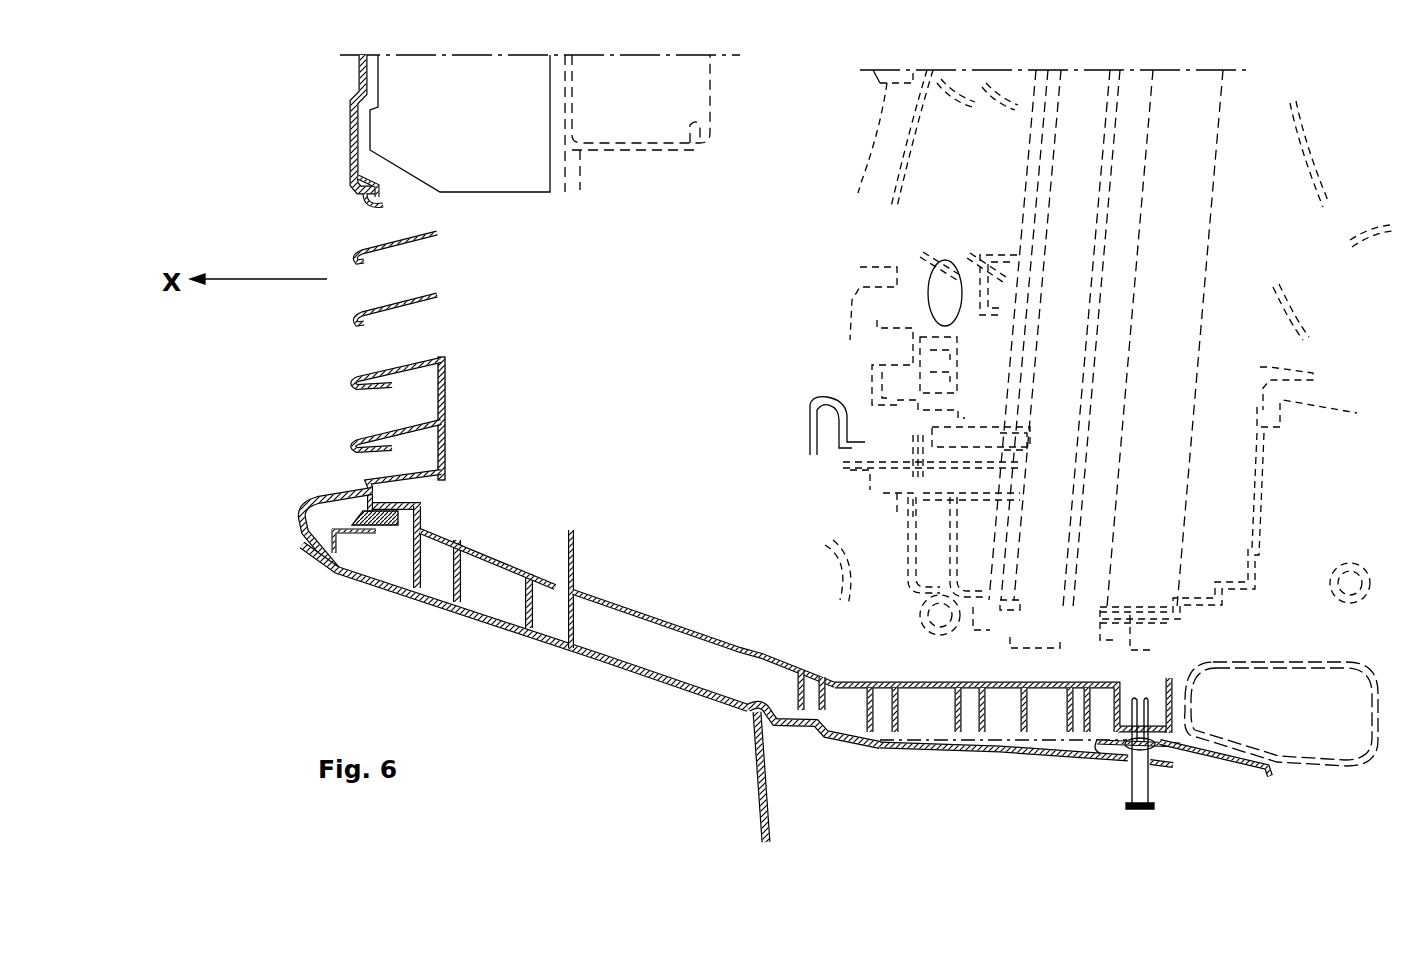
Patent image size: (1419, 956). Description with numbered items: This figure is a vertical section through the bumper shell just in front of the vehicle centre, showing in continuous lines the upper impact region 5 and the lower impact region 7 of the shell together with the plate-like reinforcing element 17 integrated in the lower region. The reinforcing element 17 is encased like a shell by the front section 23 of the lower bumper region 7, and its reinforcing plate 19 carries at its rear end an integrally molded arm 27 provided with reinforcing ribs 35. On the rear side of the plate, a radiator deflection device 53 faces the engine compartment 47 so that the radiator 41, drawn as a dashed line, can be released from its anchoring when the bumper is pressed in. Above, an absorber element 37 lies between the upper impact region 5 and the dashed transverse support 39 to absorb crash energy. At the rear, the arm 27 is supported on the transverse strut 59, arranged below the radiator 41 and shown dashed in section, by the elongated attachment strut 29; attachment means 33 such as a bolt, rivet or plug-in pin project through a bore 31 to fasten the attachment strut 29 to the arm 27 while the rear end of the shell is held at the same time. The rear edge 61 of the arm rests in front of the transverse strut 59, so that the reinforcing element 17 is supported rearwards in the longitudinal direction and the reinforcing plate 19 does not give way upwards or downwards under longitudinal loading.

The upper impact region 5 is at (318, 82).
The lower impact region 7 is at (280, 515).
The reinforcing element 17 is at (622, 650).
The reinforcing plate 19 is at (755, 689).
The front section 23 is at (347, 585).
The arm 27 is at (935, 680).
The attachment strut 29 is at (1228, 753).
The bore 31 is at (1127, 745).
The attachment means 33 is at (1135, 808).
The reinforcing ribs 35 is at (1045, 720).
The absorber element 37 is at (500, 175).
The transverse support 39 is at (620, 152).
The radiator 41 is at (1127, 353).
The engine compartment 47 is at (1327, 513).
The radiator deflection device 53 is at (568, 538).
The transverse strut 59 is at (1330, 772).
The rear edge 61 is at (1180, 683).